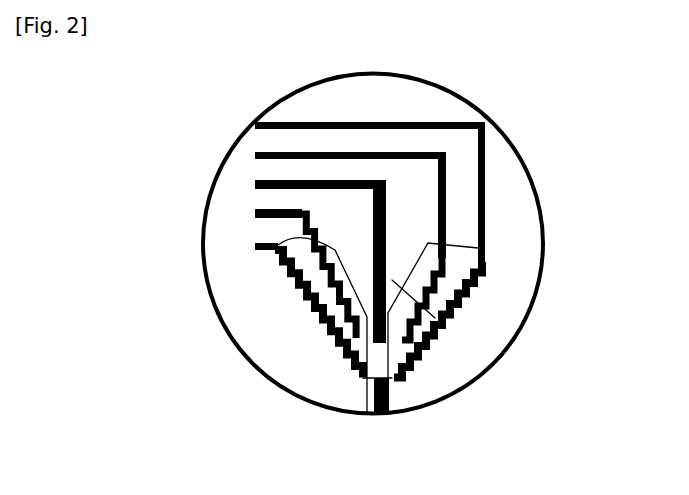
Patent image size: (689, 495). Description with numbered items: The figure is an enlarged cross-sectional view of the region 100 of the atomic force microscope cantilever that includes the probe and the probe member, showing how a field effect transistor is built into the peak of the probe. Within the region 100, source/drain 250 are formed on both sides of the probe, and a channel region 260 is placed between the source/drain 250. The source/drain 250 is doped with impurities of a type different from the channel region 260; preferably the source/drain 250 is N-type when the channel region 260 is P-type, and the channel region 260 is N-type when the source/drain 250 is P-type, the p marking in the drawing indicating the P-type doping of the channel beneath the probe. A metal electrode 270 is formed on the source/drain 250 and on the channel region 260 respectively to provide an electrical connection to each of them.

The region 100 is at (523, 163).
The source/drain 250 is at (318, 277).
The channel region 260 is at (380, 353).
The metal electrode 270 is at (265, 216).
The p-type region p is at (440, 307).